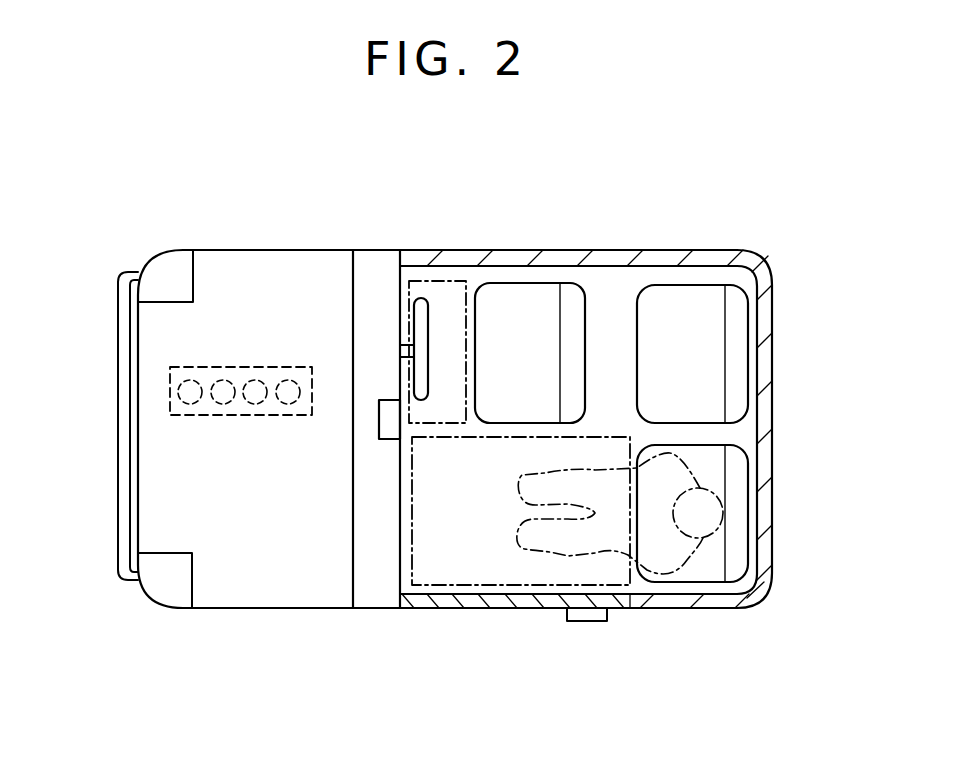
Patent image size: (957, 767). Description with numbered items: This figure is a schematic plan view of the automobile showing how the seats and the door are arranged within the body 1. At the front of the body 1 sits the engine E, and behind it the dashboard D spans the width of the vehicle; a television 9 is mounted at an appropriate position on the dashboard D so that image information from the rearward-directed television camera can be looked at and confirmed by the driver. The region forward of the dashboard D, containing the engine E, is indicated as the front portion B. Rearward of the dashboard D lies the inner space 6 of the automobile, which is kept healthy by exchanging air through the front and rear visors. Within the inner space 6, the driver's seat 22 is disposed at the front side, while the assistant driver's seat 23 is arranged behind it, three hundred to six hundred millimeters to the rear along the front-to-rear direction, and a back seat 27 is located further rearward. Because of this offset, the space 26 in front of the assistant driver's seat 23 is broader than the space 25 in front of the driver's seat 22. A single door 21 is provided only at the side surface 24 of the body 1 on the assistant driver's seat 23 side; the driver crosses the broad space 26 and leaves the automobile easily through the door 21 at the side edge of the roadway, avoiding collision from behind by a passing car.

The body 1 is at (295, 249).
The inner space 6 is at (693, 277).
The television 9 is at (392, 421).
The door 21 is at (503, 603).
The driver's seat 22 is at (533, 300).
The assistant driver's seat 23 is at (733, 467).
The side surface 24 is at (660, 603).
The space in front of the driver's seat 25 is at (441, 293).
The space in front of the assistant driver's seat 26 is at (437, 565).
The back seat 27 is at (708, 343).
The front section B is at (135, 627).
The dashboard D is at (378, 270).
The engine E is at (180, 386).